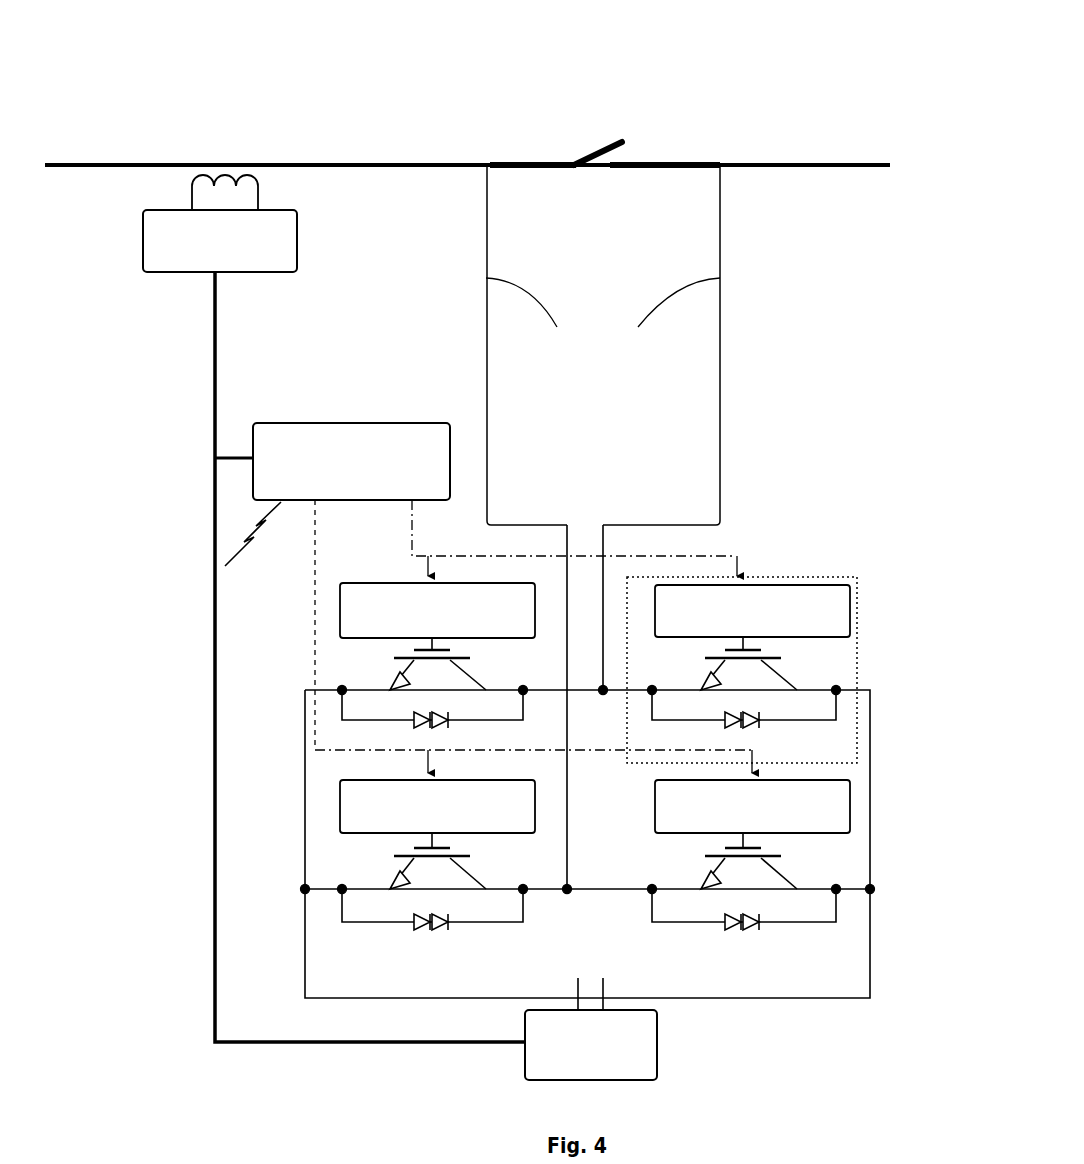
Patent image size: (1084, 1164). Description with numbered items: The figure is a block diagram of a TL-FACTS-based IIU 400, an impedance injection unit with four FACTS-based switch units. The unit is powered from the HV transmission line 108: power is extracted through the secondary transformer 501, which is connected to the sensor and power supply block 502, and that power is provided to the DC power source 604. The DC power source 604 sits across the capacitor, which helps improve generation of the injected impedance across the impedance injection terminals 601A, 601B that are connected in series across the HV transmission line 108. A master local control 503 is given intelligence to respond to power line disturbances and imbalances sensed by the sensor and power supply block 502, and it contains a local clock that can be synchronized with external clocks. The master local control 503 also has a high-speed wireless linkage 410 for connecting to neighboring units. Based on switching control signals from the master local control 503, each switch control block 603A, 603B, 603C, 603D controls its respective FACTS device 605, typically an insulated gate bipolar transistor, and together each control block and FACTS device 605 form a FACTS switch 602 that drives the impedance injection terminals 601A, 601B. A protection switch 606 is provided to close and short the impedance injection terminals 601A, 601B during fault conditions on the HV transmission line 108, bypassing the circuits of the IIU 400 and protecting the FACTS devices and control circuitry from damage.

The TL-FACTS-based IIU 400 is at (485, 50).
The HV transmission line 108 is at (800, 165).
The protection switch 606 is at (590, 160).
The secondary transformer 501 is at (245, 170).
The sensor and power supply block 502 is at (185, 210).
The master local control 503 is at (351, 461).
The high-speed wireless linkage 410 is at (260, 534).
The impedance injection terminal 601A is at (603, 345).
The impedance injection terminal 601B is at (679, 302).
The FACTS switch 602 is at (785, 577).
The switch control block 603A is at (437, 655).
The switch control block 603B is at (749, 855).
The switch control block 603C is at (437, 855).
The switch control block 603D is at (749, 656).
The DC power source 604 is at (657, 1055).
The FACTS device 605 is at (781, 851).